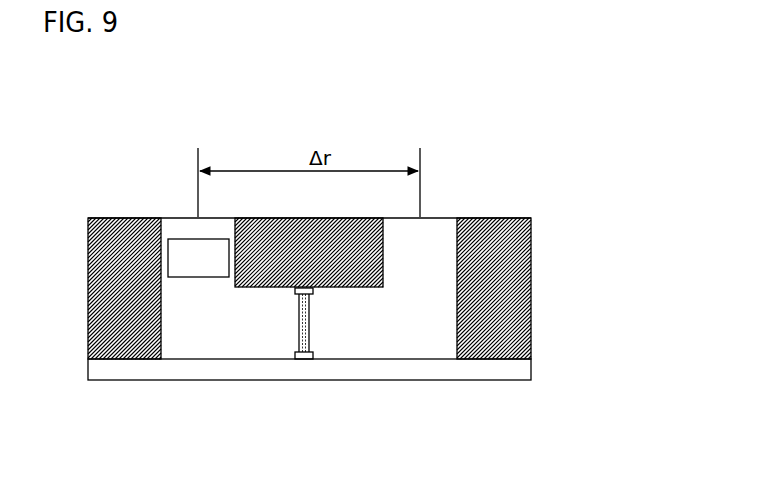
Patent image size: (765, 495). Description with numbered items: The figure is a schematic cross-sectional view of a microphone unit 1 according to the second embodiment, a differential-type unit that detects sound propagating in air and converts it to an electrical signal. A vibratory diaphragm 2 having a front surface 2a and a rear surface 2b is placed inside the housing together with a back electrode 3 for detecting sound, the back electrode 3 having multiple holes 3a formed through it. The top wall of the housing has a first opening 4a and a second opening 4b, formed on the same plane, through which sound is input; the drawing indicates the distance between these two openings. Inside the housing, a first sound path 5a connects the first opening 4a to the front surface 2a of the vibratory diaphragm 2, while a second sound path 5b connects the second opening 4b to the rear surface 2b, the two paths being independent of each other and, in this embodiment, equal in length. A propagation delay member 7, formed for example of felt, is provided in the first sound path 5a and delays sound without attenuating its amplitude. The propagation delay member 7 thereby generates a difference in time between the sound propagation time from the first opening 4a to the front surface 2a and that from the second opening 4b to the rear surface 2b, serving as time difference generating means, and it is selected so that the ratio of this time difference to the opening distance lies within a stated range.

The microphone unit 1 is at (340, 115).
The vibratory diaphragm 2 is at (318, 321).
The front surface 2a is at (298, 334).
The rear surface 2b is at (310, 334).
The back electrode 3 is at (290, 322).
The holes 3a is at (298, 302).
The first opening 4a is at (187, 226).
The second opening 4b is at (430, 228).
The first sound path 5a is at (207, 325).
The second sound path 5b is at (387, 326).
The propagation delay member 7 is at (188, 258).